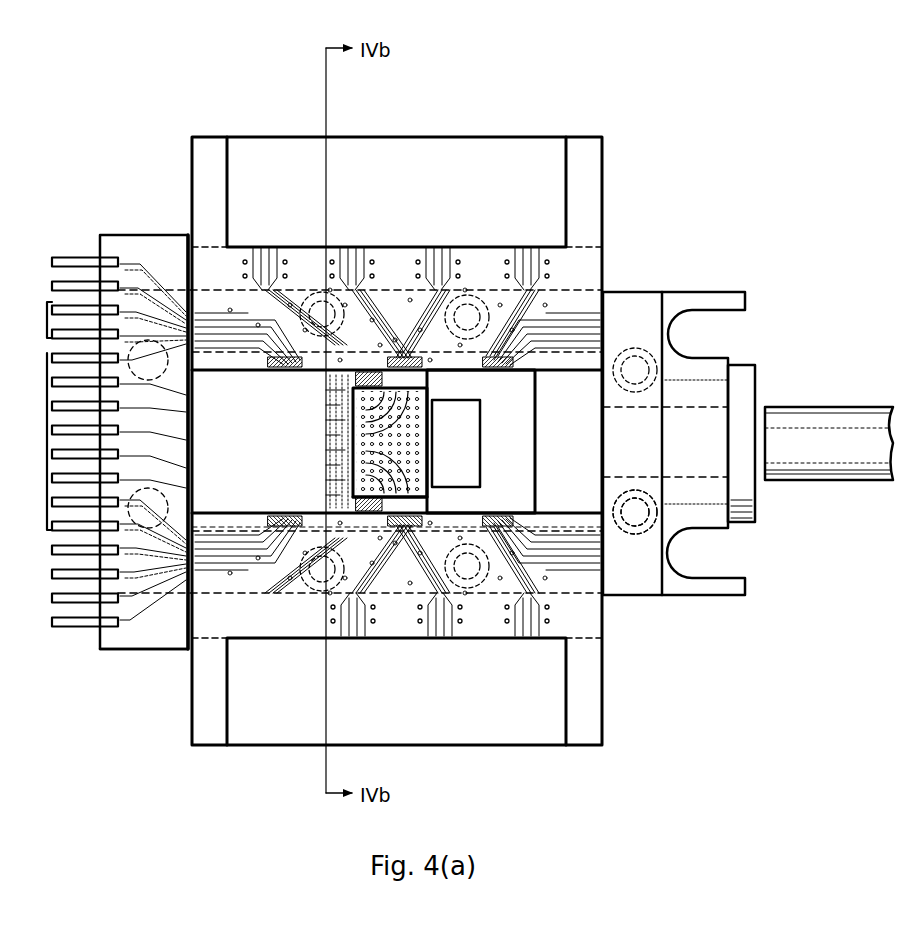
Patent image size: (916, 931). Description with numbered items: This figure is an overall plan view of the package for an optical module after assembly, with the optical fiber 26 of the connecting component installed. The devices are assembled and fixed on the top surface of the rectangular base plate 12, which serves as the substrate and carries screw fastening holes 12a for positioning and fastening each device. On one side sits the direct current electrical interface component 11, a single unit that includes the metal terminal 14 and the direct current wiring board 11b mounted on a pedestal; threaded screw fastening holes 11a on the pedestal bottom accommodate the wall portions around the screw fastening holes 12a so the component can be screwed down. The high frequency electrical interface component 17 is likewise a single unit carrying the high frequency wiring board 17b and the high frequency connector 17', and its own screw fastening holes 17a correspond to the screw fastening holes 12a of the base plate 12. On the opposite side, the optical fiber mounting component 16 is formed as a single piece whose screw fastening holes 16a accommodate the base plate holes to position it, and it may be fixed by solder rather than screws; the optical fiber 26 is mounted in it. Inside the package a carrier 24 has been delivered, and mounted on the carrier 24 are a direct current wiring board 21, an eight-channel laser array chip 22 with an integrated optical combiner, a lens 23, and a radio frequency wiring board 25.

The direct current electrical interface component 11 is at (108, 230).
The screw fastening holes 11a is at (147, 580).
The direct current wiring board 11b is at (160, 242).
The base plate 12 is at (690, 290).
The screw fastening holes 12a is at (660, 576).
The metal terminal 14 is at (75, 258).
The optical fiber mounting component 16 is at (756, 492).
The screw fastening holes 16a is at (640, 598).
The high frequency electrical interface component 17 is at (403, 448).
The high frequency connector 17' is at (396, 449).
The screw fastening holes 17a is at (312, 268).
The high frequency wiring board 17b is at (210, 272).
The direct current wiring board 21 is at (352, 385).
The 8-channel laser array chip 22 is at (372, 385).
The lens 23 is at (464, 438).
The carrier 24 is at (533, 416).
The radio frequency wiring board 25 is at (428, 493).
The optical fiber 26 is at (838, 408).